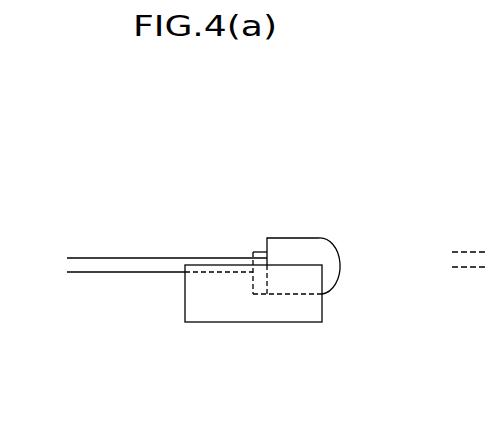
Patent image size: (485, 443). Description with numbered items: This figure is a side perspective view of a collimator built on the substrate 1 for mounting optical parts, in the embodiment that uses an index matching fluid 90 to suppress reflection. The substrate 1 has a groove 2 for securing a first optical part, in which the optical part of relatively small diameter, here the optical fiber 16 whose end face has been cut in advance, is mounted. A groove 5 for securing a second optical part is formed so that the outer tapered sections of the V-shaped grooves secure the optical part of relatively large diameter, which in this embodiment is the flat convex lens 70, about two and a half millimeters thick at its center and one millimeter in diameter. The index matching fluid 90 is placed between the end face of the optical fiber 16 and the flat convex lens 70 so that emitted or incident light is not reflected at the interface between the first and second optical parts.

The substrate 1 is at (253, 322).
The groove for securing a first optical part 2 is at (213, 277).
The groove for securing a second optical part 5 is at (290, 294).
The optical fiber 16 is at (102, 256).
The flat convex lens 70 is at (336, 239).
The index matching fluid 90 is at (254, 251).